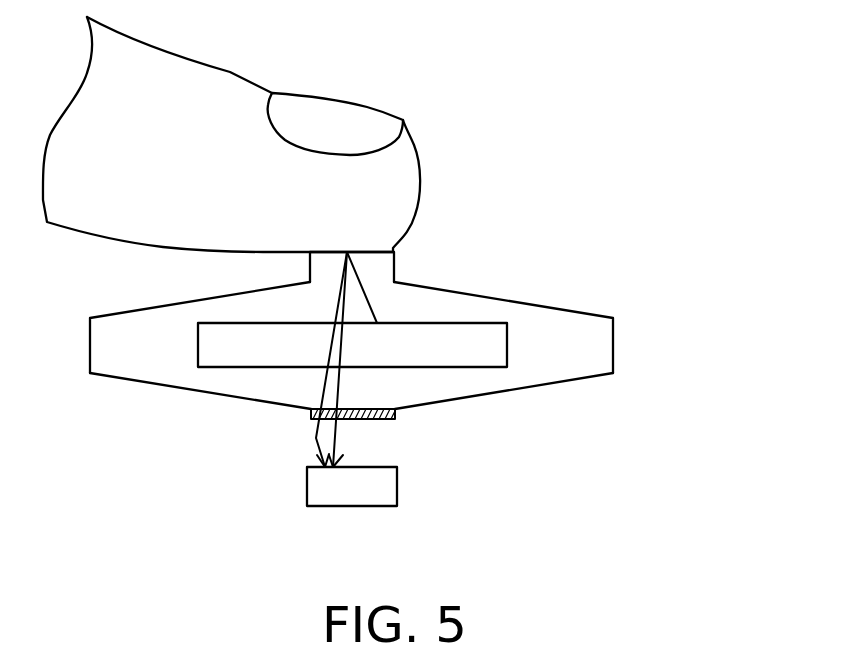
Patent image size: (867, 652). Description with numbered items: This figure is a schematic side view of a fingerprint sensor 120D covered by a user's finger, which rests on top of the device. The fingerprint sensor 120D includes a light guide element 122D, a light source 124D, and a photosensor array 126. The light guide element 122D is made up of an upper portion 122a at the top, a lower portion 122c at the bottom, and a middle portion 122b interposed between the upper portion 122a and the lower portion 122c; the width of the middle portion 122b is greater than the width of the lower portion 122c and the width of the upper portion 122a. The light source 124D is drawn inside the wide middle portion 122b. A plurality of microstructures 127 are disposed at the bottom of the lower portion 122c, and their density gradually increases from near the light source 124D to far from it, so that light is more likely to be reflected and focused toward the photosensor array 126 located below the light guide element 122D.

The fingerprint sensor 120D is at (742, 548).
The light guide element 122D is at (441, 339).
The upper portion 122a is at (383, 265).
The middle portion 122b is at (595, 342).
The lower portion 122c is at (368, 399).
The light source 124D is at (228, 357).
The photosensor array 126 is at (387, 486).
The microstructures 127 is at (397, 412).